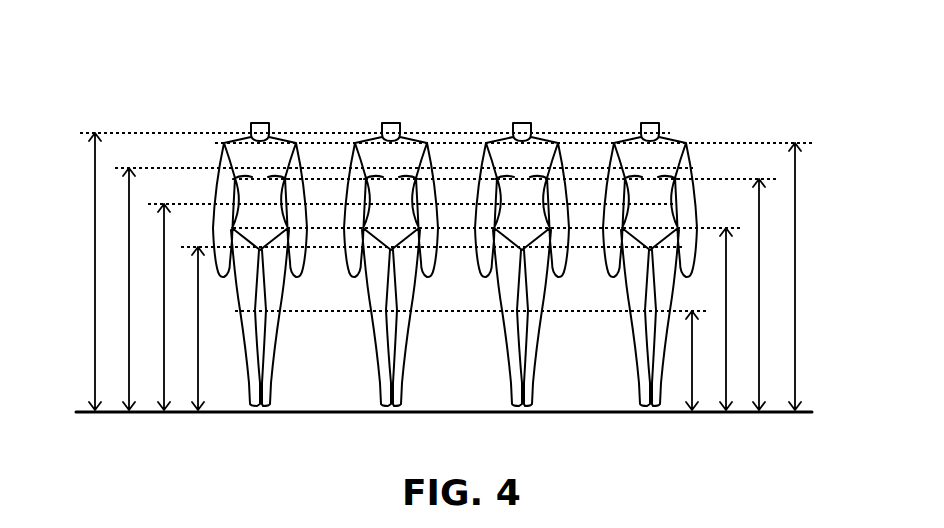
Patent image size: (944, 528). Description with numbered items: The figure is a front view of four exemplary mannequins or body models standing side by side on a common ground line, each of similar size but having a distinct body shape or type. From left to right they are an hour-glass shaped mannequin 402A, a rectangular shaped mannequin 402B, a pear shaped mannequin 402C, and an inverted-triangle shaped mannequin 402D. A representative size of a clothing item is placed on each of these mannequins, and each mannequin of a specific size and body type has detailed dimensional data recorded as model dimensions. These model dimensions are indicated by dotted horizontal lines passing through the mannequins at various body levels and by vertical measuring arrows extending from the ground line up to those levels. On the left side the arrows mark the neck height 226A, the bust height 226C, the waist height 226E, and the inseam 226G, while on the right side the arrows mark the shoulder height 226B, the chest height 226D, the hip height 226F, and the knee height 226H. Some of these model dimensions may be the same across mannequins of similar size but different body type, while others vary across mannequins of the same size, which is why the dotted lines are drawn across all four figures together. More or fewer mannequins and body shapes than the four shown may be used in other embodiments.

The mannequin 402A is at (242, 148).
The mannequin 402B is at (375, 148).
The mannequin 402C is at (507, 148).
The mannequin 402D is at (634, 148).
The neck height 226A is at (95, 219).
The shoulder height 226B is at (822, 212).
The bust height 226C is at (129, 278).
The chest height 226D is at (759, 288).
The waist height 226E is at (164, 343).
The hip height 226F is at (726, 353).
The inseam 226G is at (198, 376).
The knee height 226H is at (692, 385).